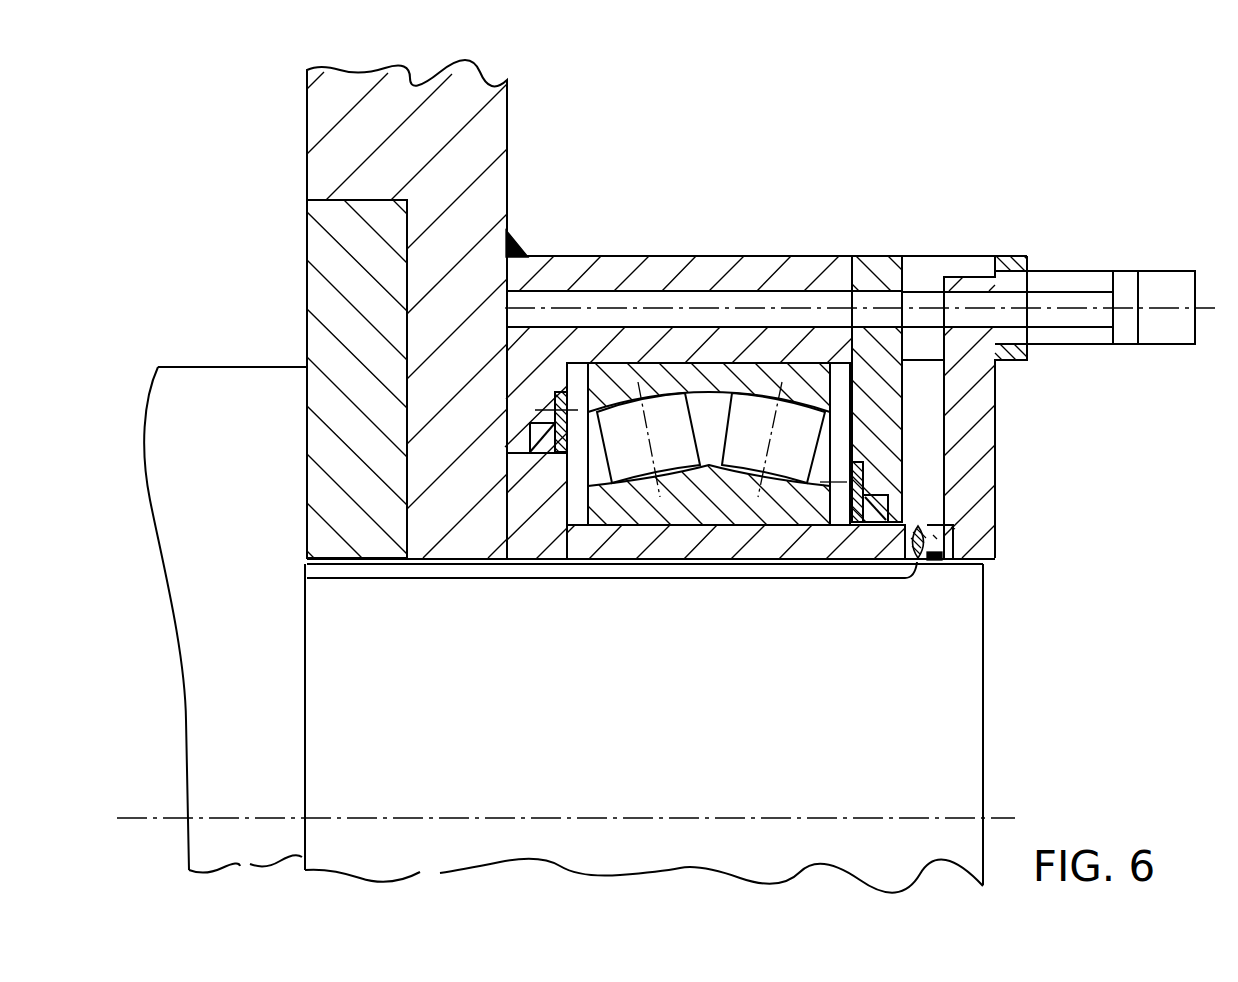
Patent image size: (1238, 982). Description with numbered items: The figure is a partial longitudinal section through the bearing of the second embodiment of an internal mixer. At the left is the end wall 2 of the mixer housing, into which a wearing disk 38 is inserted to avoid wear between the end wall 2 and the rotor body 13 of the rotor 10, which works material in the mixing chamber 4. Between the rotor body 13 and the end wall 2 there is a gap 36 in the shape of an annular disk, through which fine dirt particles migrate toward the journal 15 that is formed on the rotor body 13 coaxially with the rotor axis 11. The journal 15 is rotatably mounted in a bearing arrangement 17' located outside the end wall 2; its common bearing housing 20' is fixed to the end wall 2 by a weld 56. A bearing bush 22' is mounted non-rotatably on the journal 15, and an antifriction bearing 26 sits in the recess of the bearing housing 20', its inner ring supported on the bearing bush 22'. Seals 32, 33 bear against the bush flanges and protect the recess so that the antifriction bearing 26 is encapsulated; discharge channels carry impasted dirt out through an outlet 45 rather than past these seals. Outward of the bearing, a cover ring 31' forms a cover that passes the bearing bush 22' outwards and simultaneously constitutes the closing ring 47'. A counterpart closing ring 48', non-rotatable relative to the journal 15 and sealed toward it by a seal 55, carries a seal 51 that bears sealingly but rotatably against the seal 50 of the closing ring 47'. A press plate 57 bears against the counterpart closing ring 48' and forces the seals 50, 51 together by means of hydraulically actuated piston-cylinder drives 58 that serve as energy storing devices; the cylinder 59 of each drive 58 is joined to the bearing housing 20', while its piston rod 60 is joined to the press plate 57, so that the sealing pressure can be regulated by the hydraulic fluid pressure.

The end wall 2 is at (407, 112).
The wearing disk 38 is at (352, 228).
The mixing chamber 4 is at (217, 288).
The rotor 10 is at (190, 360).
The gap 36 is at (305, 367).
The rotor body 13 is at (215, 488).
The journal 15 is at (384, 717).
The axis 11 is at (868, 816).
The weld 56 is at (521, 246).
The outlet 45 is at (612, 302).
The bearing housing 20' is at (678, 363).
The bearing arrangement 17' is at (877, 212).
The cover ring 31' is at (882, 344).
The piston rod 60 is at (1038, 297).
The cylinder 59 is at (1090, 271).
The piston-cylinder drive 58 is at (1126, 258).
The press plate 57 is at (978, 430).
The counterpart closing ring 48' is at (1008, 516).
The seal 51 is at (953, 527).
The seal 55 is at (938, 560).
The closing ring 47' is at (900, 576).
The seal 50 is at (910, 526).
The seal 33 is at (880, 518).
The bearing bush 22' is at (651, 576).
The seal 32 is at (548, 447).
The antifriction bearing 26 is at (693, 425).